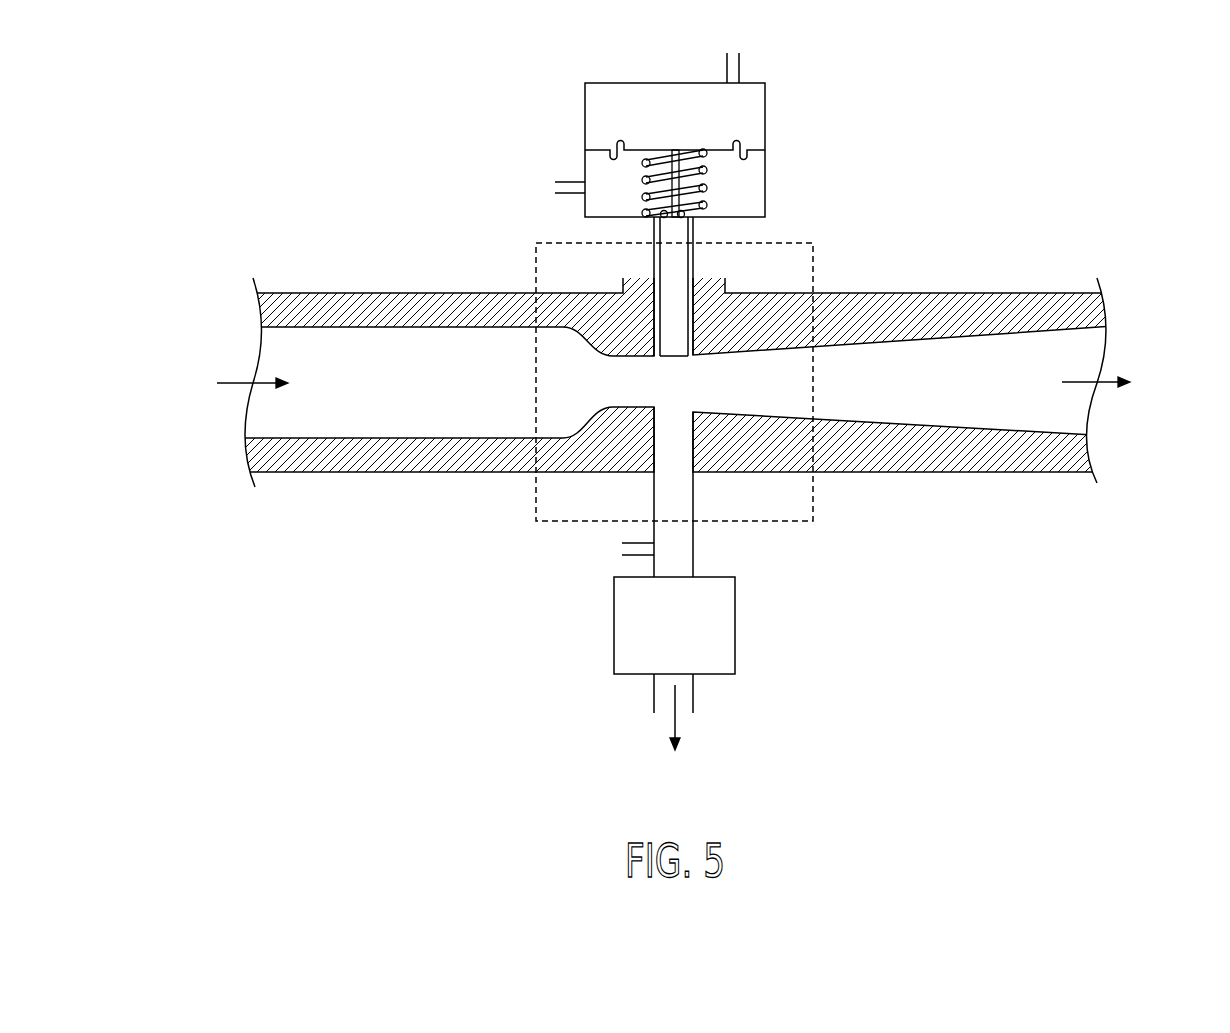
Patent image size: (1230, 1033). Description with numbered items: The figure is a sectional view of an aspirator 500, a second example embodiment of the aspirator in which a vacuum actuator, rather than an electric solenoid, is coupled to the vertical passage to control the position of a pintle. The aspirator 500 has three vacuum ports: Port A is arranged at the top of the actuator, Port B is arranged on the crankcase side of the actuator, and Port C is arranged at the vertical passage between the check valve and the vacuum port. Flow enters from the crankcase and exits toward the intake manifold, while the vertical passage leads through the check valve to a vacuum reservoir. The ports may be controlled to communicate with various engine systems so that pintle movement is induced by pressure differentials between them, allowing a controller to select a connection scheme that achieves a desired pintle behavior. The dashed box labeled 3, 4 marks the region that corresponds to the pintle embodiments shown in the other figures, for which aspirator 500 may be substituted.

The aspirator 500 is at (943, 182).
The region shown in FIG. 3 (venturi valve assembly) 3 is at (815, 500).
The region shown in FIG. 4 (venturi valve assembly) 4 is at (674, 382).